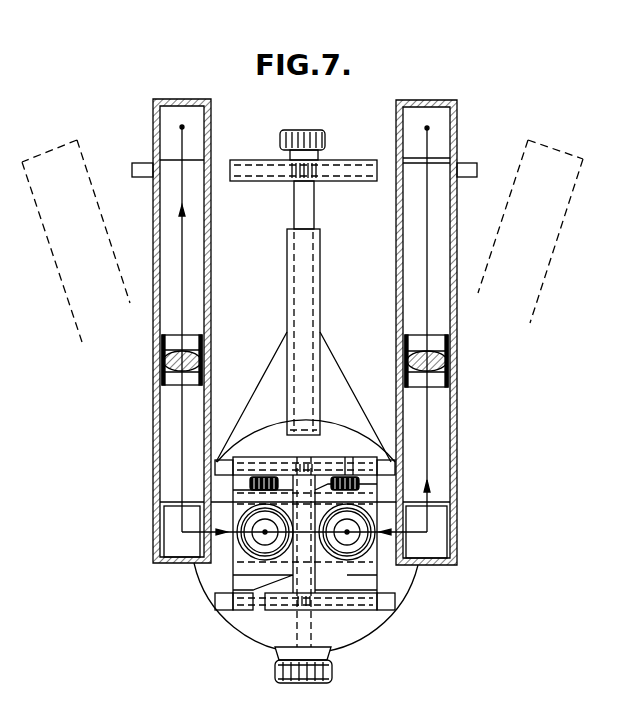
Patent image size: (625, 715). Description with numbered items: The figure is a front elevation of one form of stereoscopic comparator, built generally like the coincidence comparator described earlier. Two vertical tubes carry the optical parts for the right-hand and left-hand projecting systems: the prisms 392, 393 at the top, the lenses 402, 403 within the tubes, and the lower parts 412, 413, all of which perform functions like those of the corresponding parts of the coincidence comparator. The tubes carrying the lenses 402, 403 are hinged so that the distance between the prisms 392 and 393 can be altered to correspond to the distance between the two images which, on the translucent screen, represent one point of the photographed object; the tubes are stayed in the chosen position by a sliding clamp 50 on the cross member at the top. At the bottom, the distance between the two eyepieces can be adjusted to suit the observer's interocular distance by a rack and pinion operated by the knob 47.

The prism 393 is at (168, 112).
The prism 392 is at (440, 122).
The lens 403 is at (186, 356).
The lens 402 is at (437, 352).
The comparator element 413 is at (172, 544).
The comparator element 412 is at (438, 541).
The sliding clamp 50 is at (350, 182).
The rack and pinion operator 47 is at (332, 668).